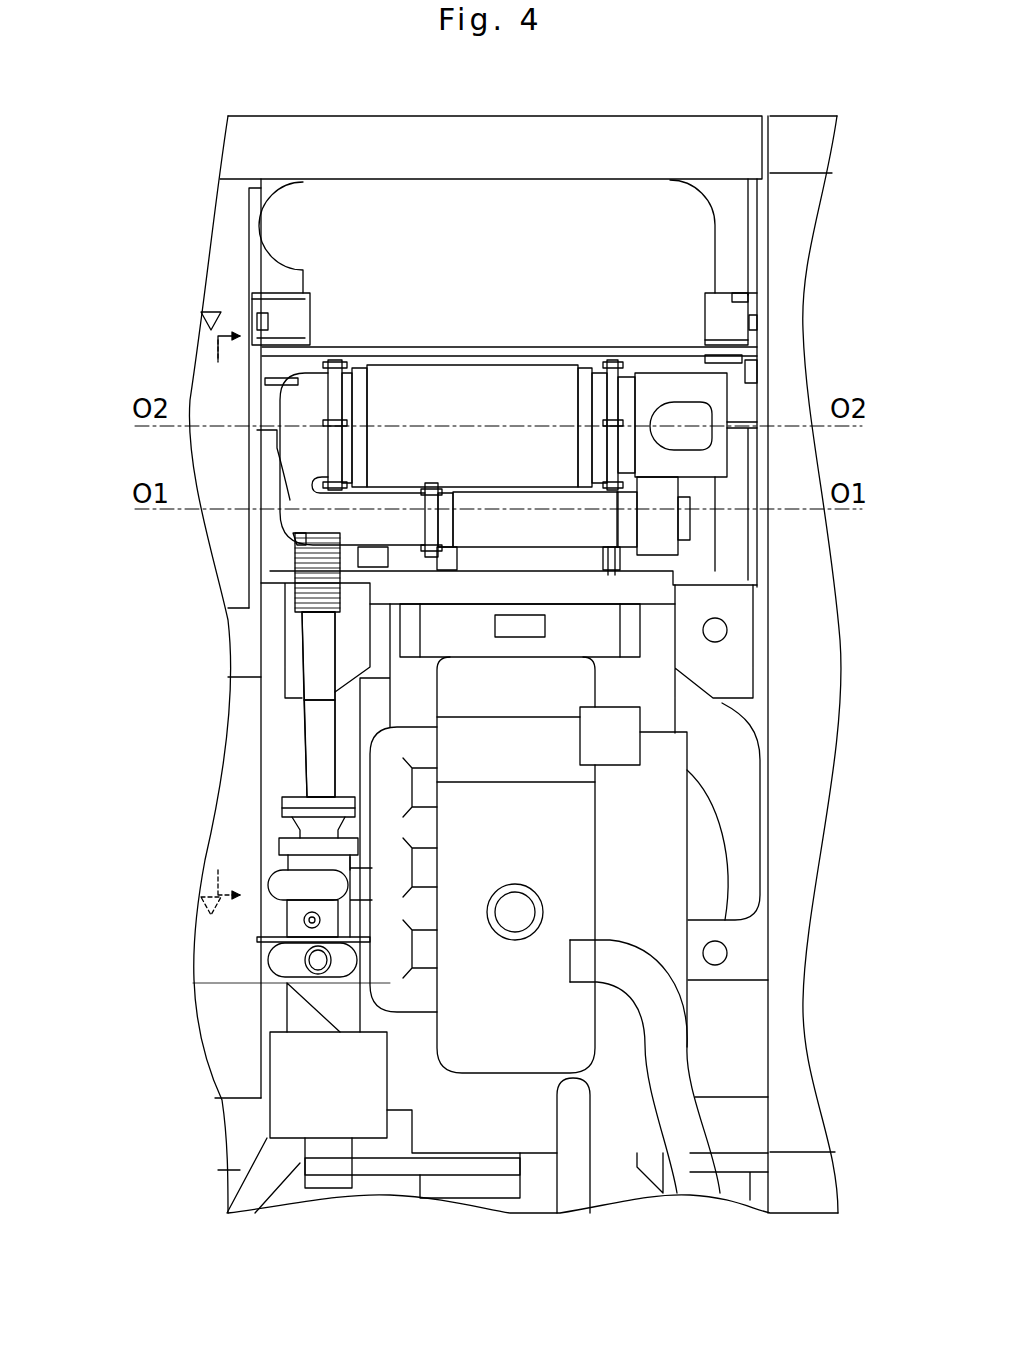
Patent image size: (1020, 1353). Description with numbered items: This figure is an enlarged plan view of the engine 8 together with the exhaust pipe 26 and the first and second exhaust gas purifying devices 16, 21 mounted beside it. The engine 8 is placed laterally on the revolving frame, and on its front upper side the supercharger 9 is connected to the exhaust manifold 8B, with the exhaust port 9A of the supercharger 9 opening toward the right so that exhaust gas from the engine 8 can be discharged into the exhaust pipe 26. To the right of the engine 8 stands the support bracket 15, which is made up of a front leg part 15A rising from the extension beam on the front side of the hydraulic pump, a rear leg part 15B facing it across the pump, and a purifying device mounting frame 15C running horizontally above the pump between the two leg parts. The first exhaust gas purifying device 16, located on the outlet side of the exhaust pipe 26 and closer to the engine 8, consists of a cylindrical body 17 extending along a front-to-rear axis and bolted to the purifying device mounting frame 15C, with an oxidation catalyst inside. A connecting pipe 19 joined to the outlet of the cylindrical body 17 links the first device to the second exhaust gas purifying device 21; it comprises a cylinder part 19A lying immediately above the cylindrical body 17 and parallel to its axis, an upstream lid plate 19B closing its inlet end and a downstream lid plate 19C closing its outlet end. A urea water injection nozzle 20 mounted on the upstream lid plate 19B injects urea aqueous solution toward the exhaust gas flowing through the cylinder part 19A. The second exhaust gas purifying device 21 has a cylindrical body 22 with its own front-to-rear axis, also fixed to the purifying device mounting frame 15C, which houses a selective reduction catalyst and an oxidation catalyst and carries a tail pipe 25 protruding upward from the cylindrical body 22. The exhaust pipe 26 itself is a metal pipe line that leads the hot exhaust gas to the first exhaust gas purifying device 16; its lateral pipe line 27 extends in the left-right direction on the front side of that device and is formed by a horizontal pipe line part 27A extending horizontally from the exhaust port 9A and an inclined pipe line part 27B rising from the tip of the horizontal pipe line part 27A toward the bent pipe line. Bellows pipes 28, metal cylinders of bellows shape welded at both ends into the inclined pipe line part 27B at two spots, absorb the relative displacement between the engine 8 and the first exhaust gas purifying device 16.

The engine 8 is at (515, 855).
The exhaust manifold 8B is at (390, 988).
The supercharger 9 is at (290, 878).
The exhaust port 9A is at (305, 805).
The support bracket 15 is at (583, 362).
The front leg part 15A is at (272, 310).
The rear leg part 15B is at (723, 332).
The purifying device mounting frame 15C is at (670, 358).
The first exhaust gas purifying device 16 is at (388, 555).
The cylindrical body 17 is at (537, 548).
The connecting pipe 19 is at (552, 522).
The cylinder part 19A is at (330, 521).
The upstream lid plate 19B is at (680, 490).
The downstream lid plate 19C is at (295, 530).
The urea water injection nozzle 20 is at (693, 537).
The second exhaust gas purifying device 21 is at (400, 395).
The cylindrical body 22 is at (490, 405).
The tail pipe 25 is at (677, 417).
The exhaust pipe 26 is at (307, 730).
The lateral pipe line 27 is at (320, 690).
The horizontal pipe line part 27A is at (320, 772).
The inclined pipe line part 27B is at (318, 642).
The bellows pipe 28 is at (313, 592).